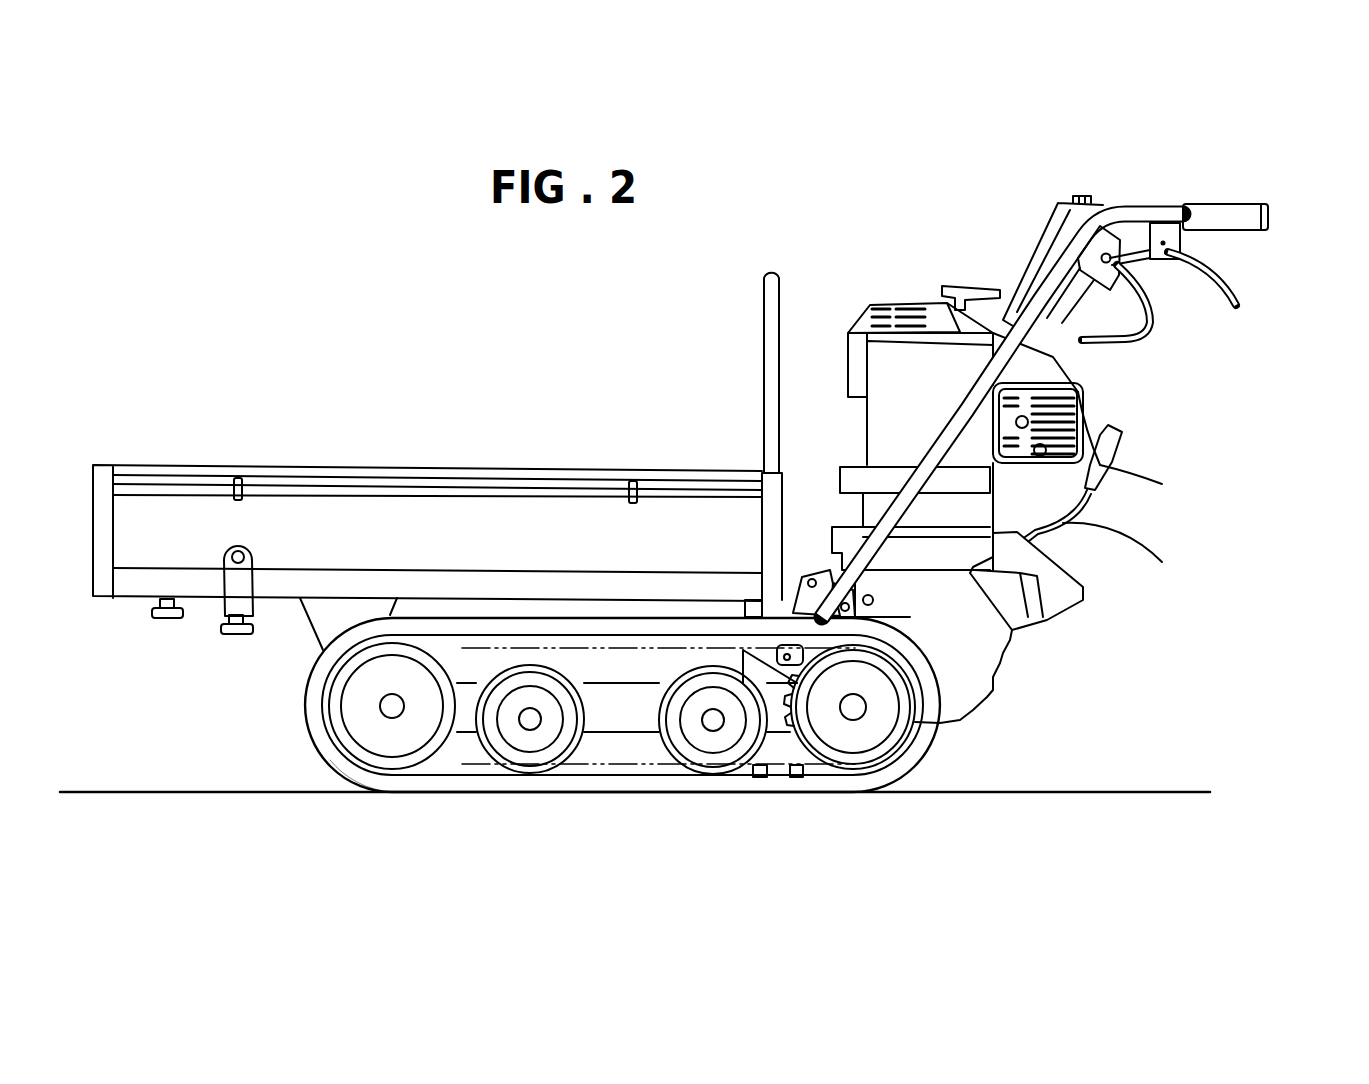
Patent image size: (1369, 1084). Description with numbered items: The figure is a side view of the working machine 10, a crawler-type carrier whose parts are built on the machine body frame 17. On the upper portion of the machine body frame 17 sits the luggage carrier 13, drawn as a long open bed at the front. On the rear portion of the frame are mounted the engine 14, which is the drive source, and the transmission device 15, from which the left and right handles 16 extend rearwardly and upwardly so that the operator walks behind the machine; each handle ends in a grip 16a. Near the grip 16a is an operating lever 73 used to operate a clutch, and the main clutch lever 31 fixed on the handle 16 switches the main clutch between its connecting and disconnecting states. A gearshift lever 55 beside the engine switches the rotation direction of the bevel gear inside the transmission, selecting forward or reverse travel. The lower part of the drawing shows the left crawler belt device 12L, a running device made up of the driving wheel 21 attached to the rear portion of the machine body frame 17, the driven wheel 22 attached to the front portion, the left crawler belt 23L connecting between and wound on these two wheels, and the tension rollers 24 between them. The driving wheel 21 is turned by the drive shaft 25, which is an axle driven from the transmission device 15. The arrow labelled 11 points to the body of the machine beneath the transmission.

The working machine 10 is at (261, 186).
The vehicle body 11 is at (1068, 670).
The left crawler belt device 12L is at (310, 788).
The luggage carrier 13 is at (285, 465).
The engine 14 is at (913, 357).
The transmission device 15 is at (958, 515).
The handles 16 is at (1117, 215).
The grips 16a is at (1212, 205).
The machine body frame 17 is at (615, 740).
The driving wheel 21 is at (827, 777).
The driven wheel 22 is at (378, 766).
The left crawler belt 23L is at (337, 773).
The tension rollers 24 is at (485, 752).
The drive shafts 25 is at (855, 712).
The main clutch lever 31 is at (1155, 323).
The gearshift lever 55 is at (1113, 465).
The left operating lever 73 is at (1223, 270).